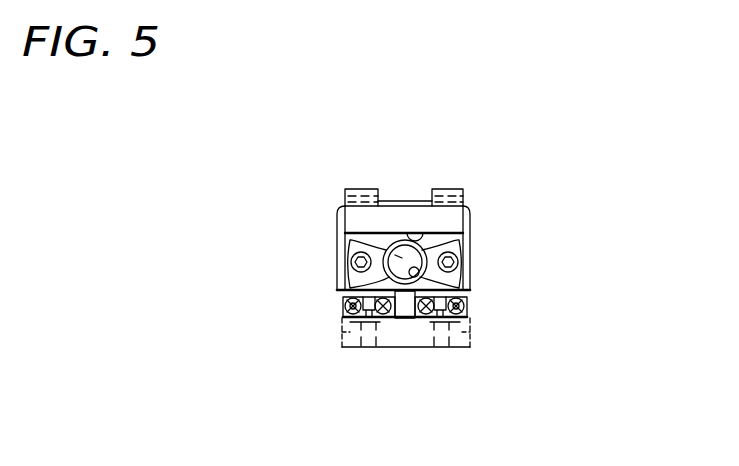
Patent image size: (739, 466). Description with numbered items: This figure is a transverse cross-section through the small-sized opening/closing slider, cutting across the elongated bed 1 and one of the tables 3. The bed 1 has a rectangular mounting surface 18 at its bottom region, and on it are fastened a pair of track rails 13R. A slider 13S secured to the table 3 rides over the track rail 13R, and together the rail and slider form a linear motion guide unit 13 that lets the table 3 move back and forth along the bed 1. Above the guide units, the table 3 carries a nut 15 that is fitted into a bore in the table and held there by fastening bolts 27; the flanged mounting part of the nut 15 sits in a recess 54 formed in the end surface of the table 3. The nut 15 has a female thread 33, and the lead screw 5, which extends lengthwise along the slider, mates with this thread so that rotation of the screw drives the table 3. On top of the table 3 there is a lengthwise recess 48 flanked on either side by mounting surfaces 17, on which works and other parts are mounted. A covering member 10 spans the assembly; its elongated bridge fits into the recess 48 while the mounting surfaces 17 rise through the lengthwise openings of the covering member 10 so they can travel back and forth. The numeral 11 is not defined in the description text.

The bed 1 is at (413, 340).
The table 3 is at (455, 222).
The lead screw 5 is at (352, 240).
The covering member 10 is at (340, 215).
The bearing support 11 is at (345, 316).
The linear motion guide unit 13 is at (318, 428).
The slider 13S is at (343, 312).
The track rail 13R is at (368, 323).
The nut 15 is at (393, 275).
The mounting surface 17 is at (362, 190).
The mounting surface 18 is at (392, 348).
The fastening bolt 27 is at (351, 262).
The female thread 33 is at (420, 275).
The lengthwise recess 48 is at (432, 204).
The recess 54 is at (400, 256).